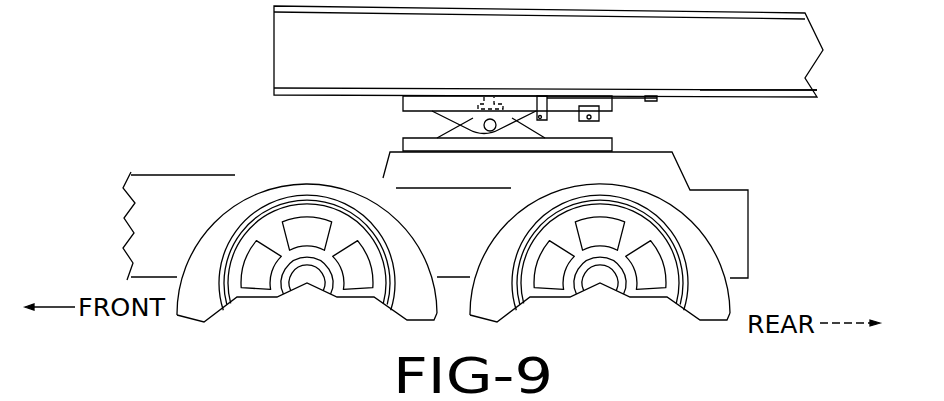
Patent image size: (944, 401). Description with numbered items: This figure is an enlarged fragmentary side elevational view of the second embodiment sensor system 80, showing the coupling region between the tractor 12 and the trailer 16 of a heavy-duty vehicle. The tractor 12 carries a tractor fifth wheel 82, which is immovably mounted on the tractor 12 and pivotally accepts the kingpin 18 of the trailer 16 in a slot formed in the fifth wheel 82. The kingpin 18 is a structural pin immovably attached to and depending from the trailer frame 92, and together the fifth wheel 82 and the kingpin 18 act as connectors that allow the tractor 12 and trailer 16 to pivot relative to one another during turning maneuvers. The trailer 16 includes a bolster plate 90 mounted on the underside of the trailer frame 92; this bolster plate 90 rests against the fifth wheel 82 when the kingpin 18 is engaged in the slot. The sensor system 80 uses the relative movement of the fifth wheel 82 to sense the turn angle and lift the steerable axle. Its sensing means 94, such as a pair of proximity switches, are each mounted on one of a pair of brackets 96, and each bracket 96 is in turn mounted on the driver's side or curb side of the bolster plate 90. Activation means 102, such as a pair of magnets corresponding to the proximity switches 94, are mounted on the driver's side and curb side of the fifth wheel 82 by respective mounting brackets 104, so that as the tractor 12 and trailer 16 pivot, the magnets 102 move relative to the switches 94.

The tractor 12 is at (195, 175).
The trailer 16 is at (273, 53).
The kingpin 18 is at (476, 104).
The second embodiment sensor system 80 is at (768, 203).
The tractor fifth wheel 82 is at (402, 108).
The bolster plate 90 is at (645, 99).
The trailer frame 92 is at (775, 97).
The sensing means 94 is at (540, 118).
The brackets 96 is at (541, 116).
The activation means 102 is at (592, 118).
The mounting brackets 104 is at (591, 115).